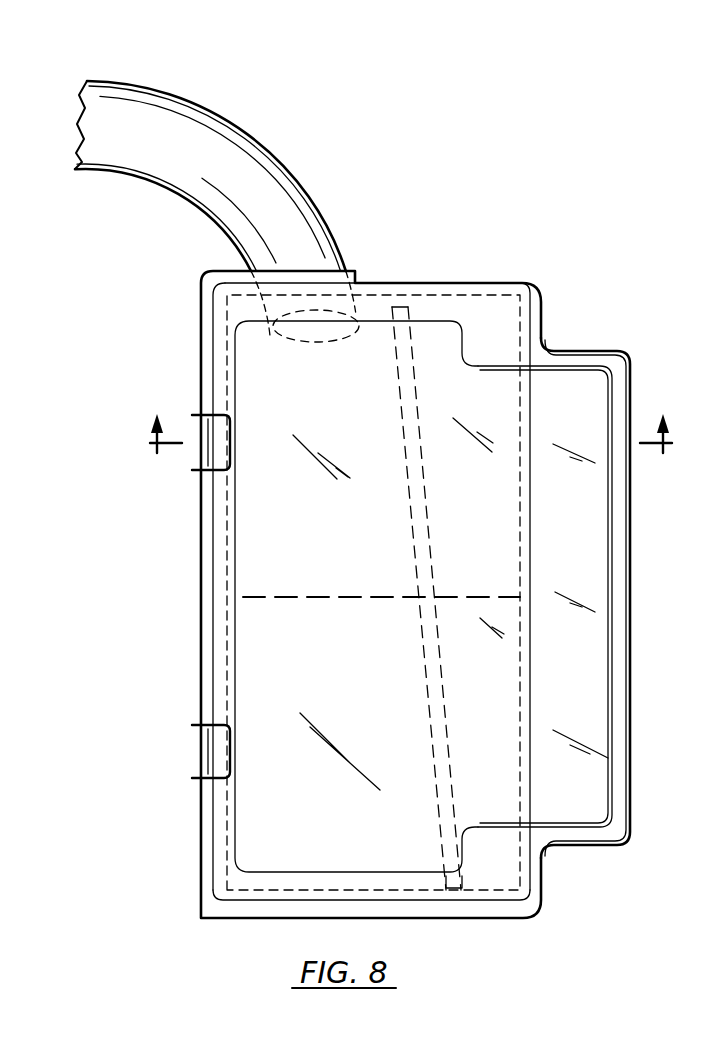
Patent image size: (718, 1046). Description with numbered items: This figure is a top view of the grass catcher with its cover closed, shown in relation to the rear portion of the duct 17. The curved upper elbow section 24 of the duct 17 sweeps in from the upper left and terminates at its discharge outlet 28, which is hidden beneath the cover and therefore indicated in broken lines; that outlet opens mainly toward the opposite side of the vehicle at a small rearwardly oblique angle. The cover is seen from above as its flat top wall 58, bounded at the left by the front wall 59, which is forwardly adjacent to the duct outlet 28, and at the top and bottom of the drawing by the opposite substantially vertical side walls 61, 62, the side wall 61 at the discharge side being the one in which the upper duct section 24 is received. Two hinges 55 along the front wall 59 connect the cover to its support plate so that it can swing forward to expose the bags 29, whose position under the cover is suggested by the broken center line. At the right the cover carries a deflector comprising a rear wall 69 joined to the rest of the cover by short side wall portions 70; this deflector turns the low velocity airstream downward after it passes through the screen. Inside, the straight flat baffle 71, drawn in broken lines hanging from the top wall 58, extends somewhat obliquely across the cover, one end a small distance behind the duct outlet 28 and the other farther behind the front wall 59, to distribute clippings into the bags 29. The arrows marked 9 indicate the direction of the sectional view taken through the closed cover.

The section line of FIG. 9 is at (409, 432).
The duct 17 is at (232, 115).
The upper elbow section 24 is at (292, 172).
The discharge outlet 28 is at (320, 343).
The bags 29 is at (232, 612).
The hinges 55 is at (198, 414).
The flat top wall 58 is at (348, 762).
The front wall 59 is at (218, 338).
The side wall 61 is at (450, 318).
The side wall 62 is at (485, 903).
The rear wall 69 is at (598, 547).
The side wall portions 70 is at (585, 366).
The baffle 71 is at (412, 516).